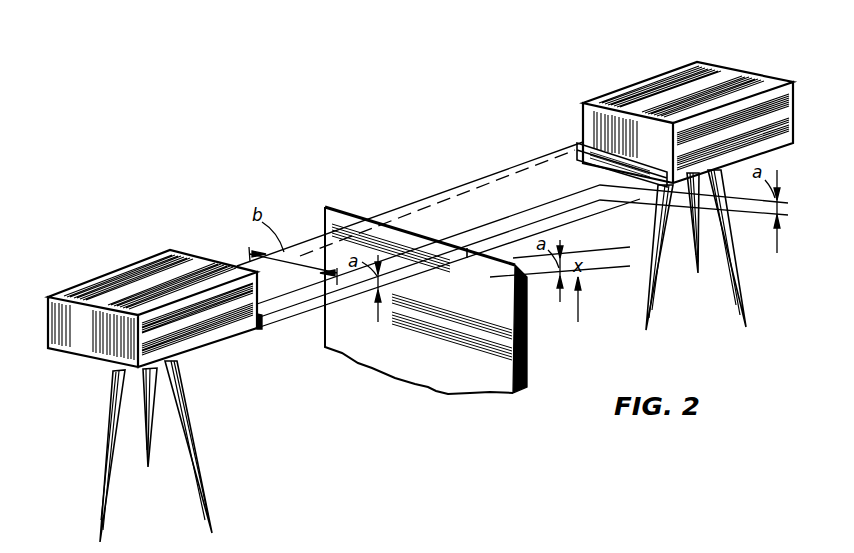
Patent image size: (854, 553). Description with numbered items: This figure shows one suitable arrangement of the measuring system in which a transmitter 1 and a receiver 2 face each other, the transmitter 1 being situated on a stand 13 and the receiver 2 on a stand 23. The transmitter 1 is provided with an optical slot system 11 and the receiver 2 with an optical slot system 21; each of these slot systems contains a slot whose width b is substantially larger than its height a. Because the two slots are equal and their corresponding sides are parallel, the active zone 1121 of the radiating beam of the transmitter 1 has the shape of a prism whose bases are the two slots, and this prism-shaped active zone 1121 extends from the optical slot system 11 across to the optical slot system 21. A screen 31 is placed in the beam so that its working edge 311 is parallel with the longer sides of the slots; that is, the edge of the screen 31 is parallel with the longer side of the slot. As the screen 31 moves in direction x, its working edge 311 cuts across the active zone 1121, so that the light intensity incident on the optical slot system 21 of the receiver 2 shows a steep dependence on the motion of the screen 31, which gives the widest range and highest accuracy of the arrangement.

The transmitter 1 is at (139, 270).
The optical slot system 11 is at (262, 328).
The stand 13 is at (188, 425).
The active zone of the radiating beam 1121 is at (307, 243).
The receiver 2 is at (679, 76).
The optical slot system 21 is at (630, 168).
The stand 23 is at (737, 258).
The screen 31 is at (509, 374).
The working edge 311 is at (482, 254).